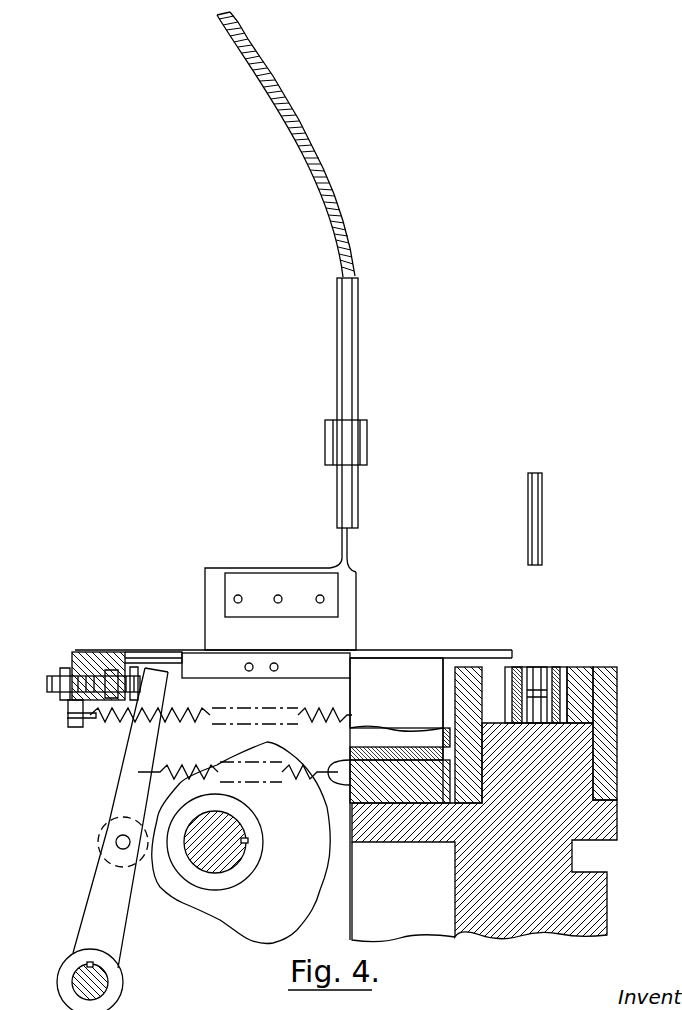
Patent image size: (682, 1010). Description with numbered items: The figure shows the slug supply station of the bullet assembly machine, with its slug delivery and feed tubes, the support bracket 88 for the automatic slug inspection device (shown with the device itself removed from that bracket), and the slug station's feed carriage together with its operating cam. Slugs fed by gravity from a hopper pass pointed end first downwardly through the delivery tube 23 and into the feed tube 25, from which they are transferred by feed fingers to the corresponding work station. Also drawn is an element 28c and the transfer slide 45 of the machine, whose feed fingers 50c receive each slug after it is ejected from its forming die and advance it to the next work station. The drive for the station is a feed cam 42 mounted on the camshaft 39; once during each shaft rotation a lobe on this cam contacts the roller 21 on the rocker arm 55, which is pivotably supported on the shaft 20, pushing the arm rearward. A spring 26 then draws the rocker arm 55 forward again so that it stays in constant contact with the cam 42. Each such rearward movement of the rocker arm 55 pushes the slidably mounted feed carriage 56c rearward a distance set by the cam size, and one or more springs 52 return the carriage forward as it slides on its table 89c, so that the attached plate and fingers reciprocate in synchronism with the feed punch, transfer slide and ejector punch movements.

The shaft 20 is at (75, 992).
The roller 21 is at (104, 838).
The delivery tube 23 is at (252, 49).
The feed tube 25 is at (344, 296).
The spring 26 is at (196, 768).
The pin 28c is at (536, 497).
The camshaft 39 is at (233, 863).
The feed cam 42 is at (287, 917).
The transfer slide 45 is at (580, 672).
The bolt 50c is at (538, 672).
The spring 52 is at (95, 724).
The rocker arm 55 is at (98, 910).
The feed carriage 56c is at (100, 652).
The bracket 88 is at (345, 431).
The plate 89c is at (195, 664).